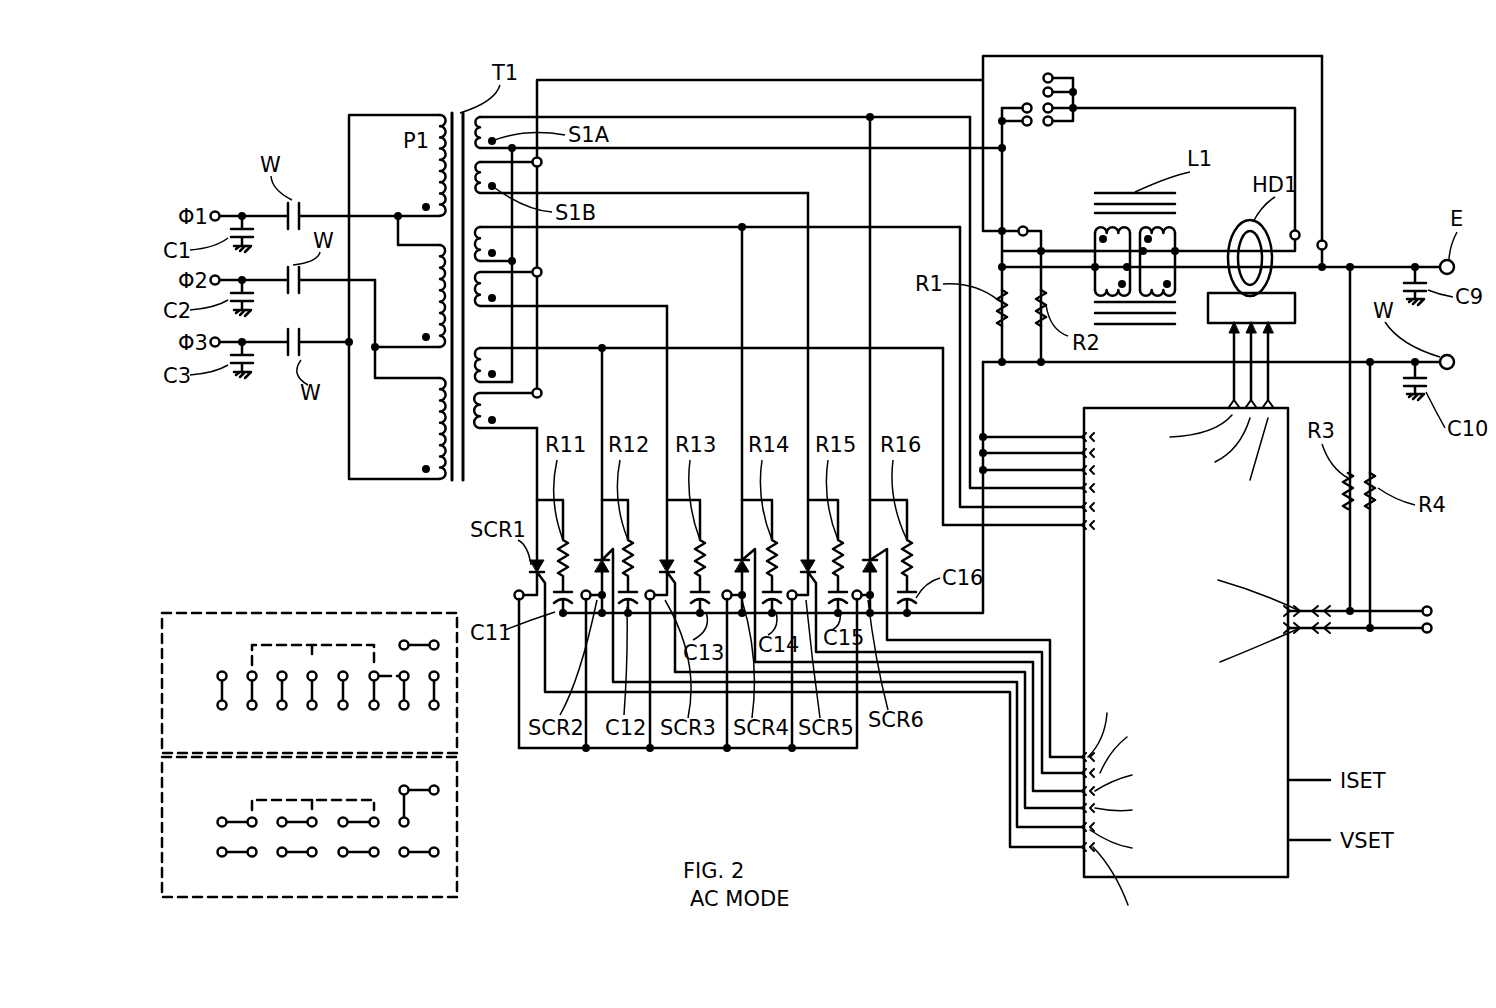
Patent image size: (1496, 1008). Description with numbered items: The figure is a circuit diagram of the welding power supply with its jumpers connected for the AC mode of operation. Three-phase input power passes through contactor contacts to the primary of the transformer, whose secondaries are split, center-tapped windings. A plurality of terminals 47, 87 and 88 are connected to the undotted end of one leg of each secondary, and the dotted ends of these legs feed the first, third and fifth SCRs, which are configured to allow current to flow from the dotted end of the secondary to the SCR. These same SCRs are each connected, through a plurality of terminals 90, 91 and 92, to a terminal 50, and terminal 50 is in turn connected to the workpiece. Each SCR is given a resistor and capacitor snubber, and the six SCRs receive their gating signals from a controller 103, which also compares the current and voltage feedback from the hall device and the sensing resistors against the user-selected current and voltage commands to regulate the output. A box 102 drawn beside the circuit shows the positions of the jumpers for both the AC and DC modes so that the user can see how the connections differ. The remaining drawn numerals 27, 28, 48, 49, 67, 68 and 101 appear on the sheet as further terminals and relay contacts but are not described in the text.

The control input terminal 27 is at (1430, 633).
The control input terminal 28 is at (1428, 606).
The terminal 47 is at (541, 389).
The relay contact terminal 48 is at (1024, 104).
The output terminal 49 is at (1326, 243).
The terminal 50 is at (857, 590).
The terminal 67 is at (1025, 226).
The terminal 68 is at (1299, 232).
The terminal 87 is at (541, 268).
The terminal 88 is at (541, 165).
The terminal 90 is at (517, 592).
The terminal 91 is at (650, 590).
The terminal 92 is at (792, 590).
The relay 101 is at (1076, 104).
The box 102 is at (460, 675).
The controller 103 is at (1167, 559).